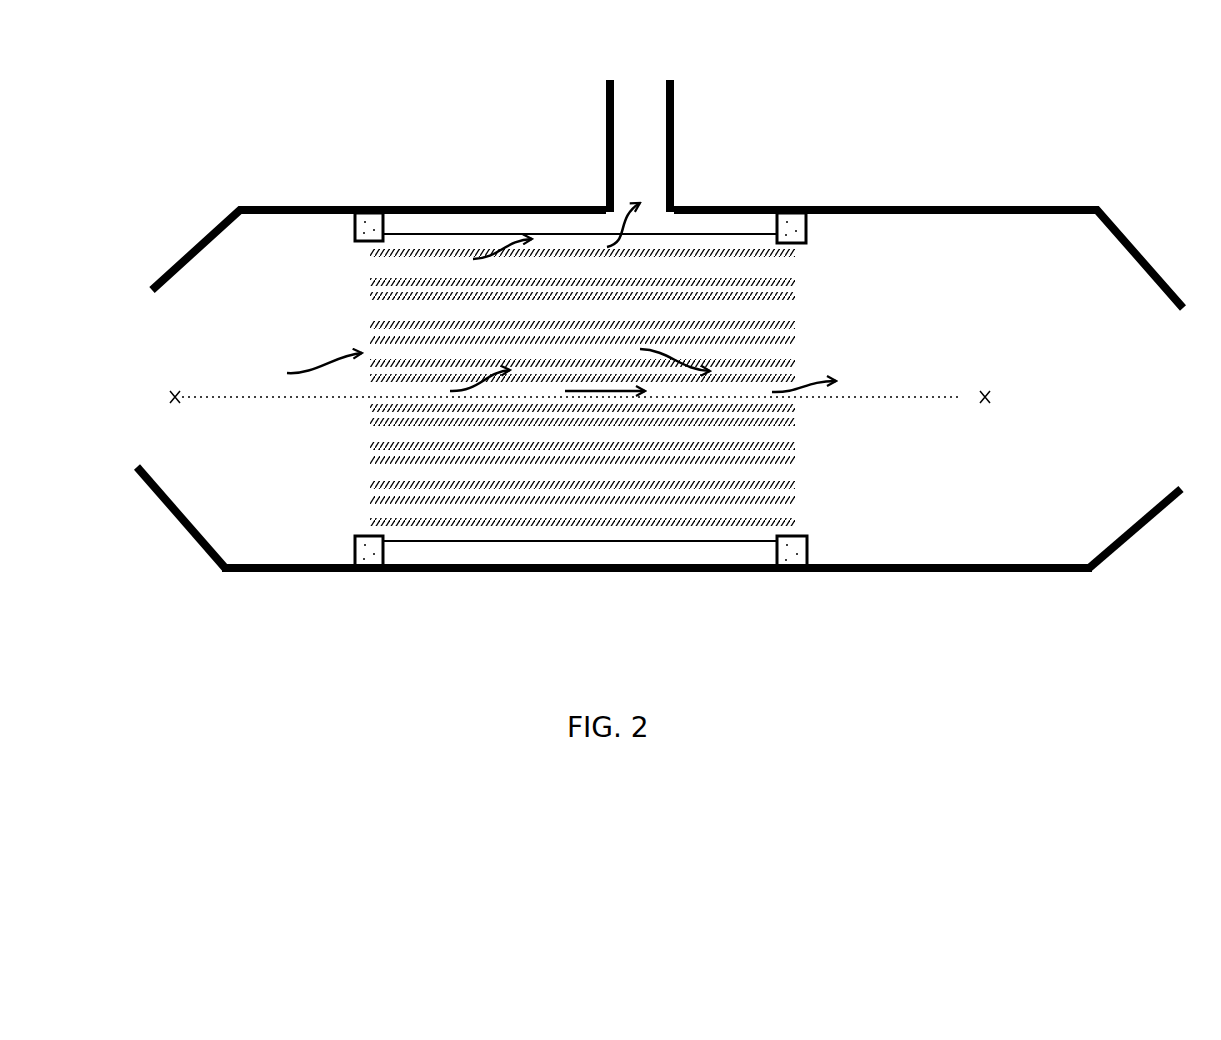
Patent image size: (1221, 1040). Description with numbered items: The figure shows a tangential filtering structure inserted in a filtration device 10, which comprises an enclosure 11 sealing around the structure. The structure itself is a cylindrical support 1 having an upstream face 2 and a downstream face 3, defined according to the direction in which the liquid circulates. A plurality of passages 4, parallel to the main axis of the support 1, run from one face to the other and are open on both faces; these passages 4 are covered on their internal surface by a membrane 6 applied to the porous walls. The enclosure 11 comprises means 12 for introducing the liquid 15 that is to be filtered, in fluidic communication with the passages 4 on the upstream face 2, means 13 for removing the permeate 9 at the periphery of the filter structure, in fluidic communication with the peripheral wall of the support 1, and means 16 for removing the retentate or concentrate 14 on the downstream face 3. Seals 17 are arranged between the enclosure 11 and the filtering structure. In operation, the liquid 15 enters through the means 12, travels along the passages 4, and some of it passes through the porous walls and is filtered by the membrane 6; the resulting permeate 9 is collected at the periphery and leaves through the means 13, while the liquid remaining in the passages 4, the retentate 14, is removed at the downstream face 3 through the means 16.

The support 1 is at (549, 441).
The upstream face 2 is at (354, 448).
The downstream face 3 is at (842, 448).
The passages 4 is at (377, 267).
The membrane 6 is at (384, 522).
The permeate 9 is at (628, 202).
The filtration device 10 is at (660, 360).
The enclosure 11 is at (665, 570).
The means for introducing the liquid 12 is at (183, 525).
The means for removing the permeate 13 is at (674, 136).
The retentate or concentrate 14 is at (835, 380).
The liquid to be filtered 15 is at (302, 375).
The means for removing the retentate 16 is at (1140, 531).
The seals 17 is at (353, 226).